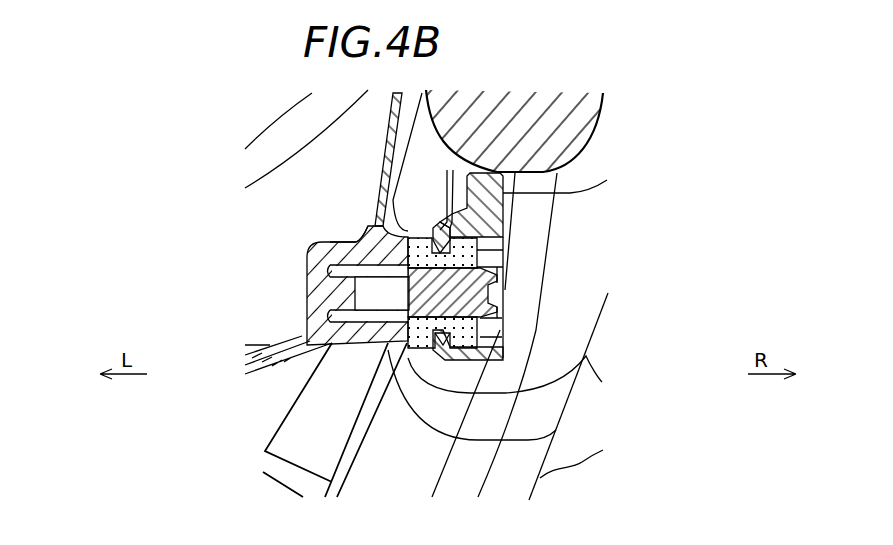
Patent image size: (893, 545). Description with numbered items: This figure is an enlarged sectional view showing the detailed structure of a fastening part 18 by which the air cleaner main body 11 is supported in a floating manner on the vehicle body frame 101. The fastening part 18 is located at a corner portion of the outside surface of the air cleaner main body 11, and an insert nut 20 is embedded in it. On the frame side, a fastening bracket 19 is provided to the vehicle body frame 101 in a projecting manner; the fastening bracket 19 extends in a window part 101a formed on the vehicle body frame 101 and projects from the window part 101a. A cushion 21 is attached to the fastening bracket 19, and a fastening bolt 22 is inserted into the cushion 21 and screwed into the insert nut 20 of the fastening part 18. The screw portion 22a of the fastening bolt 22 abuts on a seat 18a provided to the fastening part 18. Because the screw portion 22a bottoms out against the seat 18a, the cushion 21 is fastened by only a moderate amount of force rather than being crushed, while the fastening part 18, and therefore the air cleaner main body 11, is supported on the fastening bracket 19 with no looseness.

The air cleaner main body 11 is at (380, 157).
The fastening part 18 is at (454, 361).
The seat 18a is at (350, 272).
The fastening bracket 19 is at (510, 203).
The insert nut 20 is at (351, 243).
The cushion 21 is at (408, 348).
The fastening bolt 22 is at (470, 293).
The screw portion 22a is at (365, 295).
The vehicle body frame 101 is at (593, 113).
The window part 101a is at (492, 420).